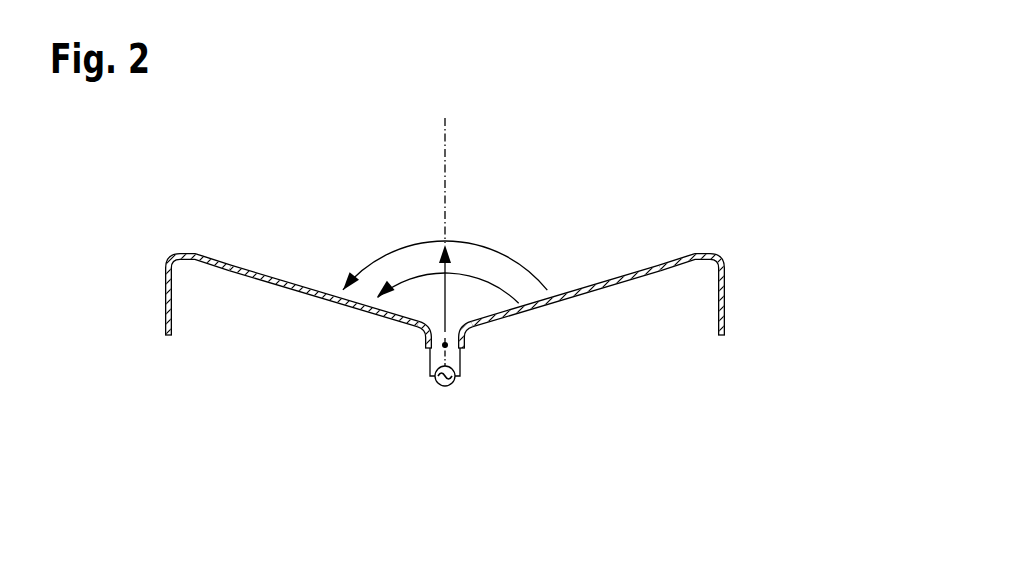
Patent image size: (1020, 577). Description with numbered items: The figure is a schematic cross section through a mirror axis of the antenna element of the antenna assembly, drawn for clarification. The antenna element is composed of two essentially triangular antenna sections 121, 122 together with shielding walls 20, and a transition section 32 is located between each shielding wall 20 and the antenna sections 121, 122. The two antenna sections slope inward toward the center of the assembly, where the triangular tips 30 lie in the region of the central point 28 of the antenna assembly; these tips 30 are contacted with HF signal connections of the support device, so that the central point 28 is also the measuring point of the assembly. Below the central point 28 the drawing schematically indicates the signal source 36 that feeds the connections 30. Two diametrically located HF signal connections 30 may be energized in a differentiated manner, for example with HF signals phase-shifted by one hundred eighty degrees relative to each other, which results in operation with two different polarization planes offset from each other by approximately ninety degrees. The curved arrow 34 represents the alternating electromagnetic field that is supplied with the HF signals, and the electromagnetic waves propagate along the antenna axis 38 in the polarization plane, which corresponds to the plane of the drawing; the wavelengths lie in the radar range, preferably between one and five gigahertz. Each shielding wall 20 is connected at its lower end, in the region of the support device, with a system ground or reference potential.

The shielding wall 20 is at (165, 300).
The transition section 32 is at (230, 243).
The antenna section 121 is at (594, 285).
The antenna section 122 is at (284, 272).
The HF signal connection 30 is at (465, 337).
The ultrasonic transducer / signal source 36 is at (438, 400).
The central point 28 is at (428, 358).
The antenna axis 38 is at (445, 138).
The curved arrow 34 is at (392, 228).